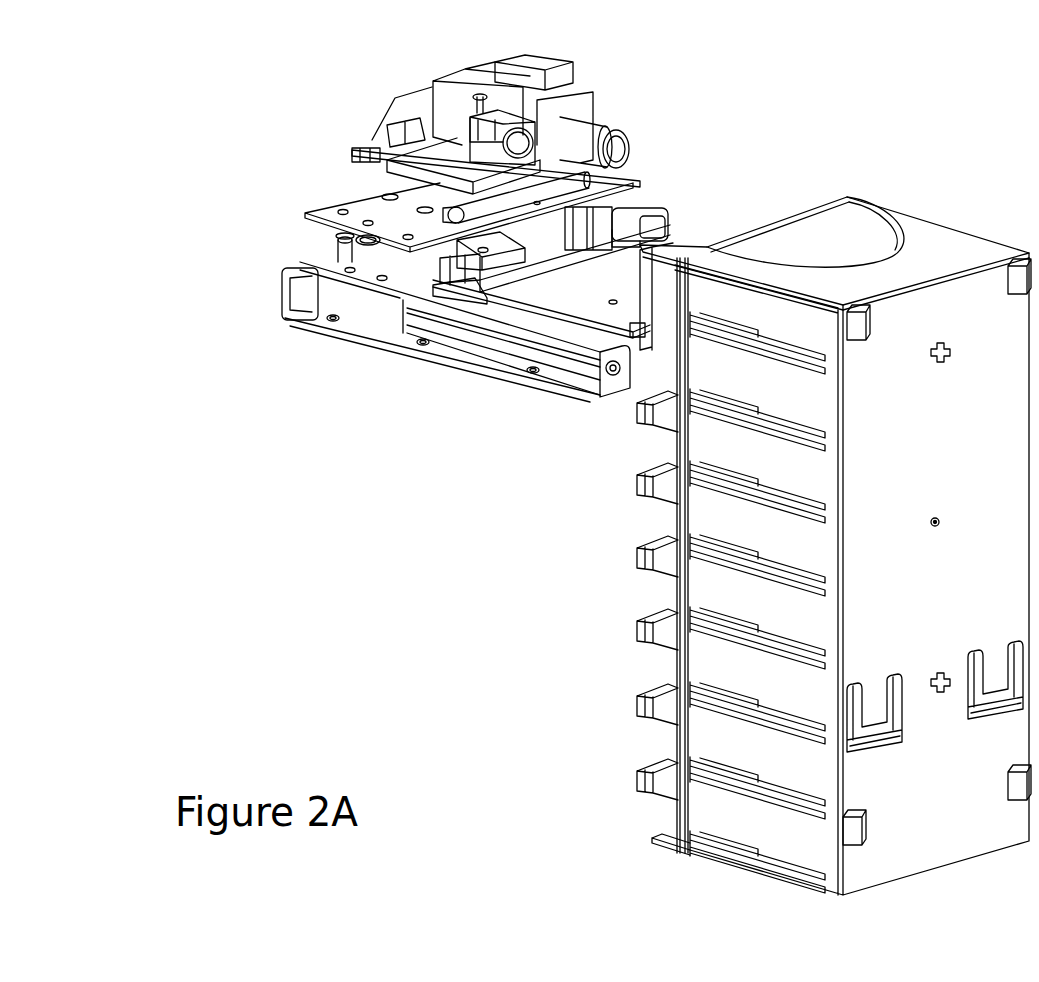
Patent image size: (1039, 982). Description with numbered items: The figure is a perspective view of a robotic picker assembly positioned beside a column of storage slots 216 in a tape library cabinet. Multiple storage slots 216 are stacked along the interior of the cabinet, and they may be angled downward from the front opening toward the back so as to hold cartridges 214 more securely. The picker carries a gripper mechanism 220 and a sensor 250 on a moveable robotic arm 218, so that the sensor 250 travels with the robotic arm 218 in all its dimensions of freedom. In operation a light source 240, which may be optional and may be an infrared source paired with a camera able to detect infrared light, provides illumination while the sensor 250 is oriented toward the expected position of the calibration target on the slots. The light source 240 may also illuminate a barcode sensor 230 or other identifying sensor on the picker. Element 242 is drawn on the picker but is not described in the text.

The cartridges 214 is at (737, 235).
The storage slots 216 is at (622, 586).
The robotic arm 218 is at (508, 342).
The gripper mechanism 220 is at (640, 207).
The barcode sensor 230 is at (458, 122).
The light source 240 is at (440, 212).
The guide shaft 242 is at (456, 222).
The sensor 250 is at (607, 130).